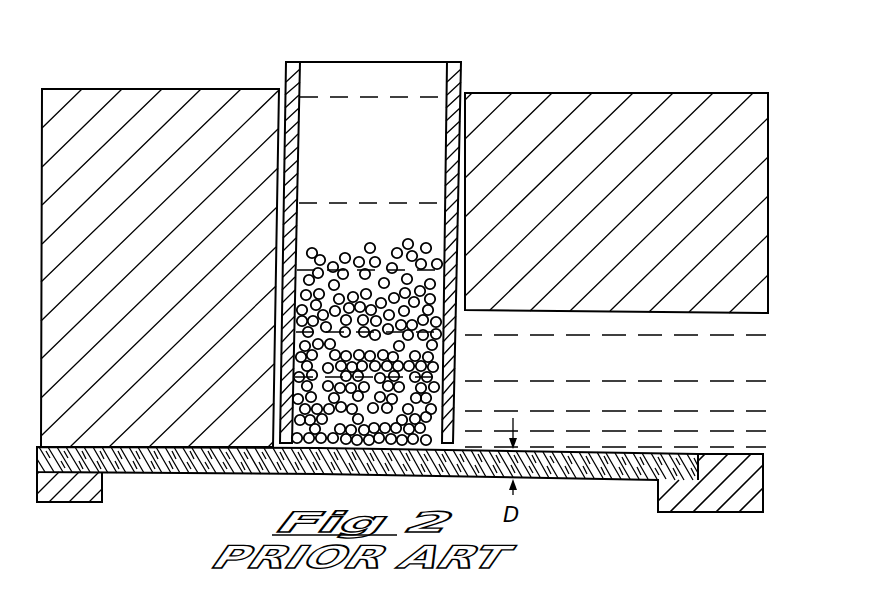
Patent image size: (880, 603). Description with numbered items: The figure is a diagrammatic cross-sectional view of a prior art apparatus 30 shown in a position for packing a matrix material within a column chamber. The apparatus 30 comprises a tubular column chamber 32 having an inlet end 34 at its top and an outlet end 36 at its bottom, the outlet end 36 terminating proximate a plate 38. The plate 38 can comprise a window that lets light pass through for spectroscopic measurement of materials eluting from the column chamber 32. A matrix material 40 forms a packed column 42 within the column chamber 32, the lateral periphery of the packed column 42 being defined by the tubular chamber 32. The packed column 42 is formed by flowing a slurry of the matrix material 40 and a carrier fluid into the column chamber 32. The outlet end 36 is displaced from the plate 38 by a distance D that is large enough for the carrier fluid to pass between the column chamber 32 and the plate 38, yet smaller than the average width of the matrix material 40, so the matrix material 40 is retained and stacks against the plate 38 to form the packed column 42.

The apparatus 30 is at (626, 52).
The tubular column chamber 32 is at (472, 79).
The inlet end 34 is at (335, 72).
The outlet end 36 is at (463, 442).
The plate 38 is at (156, 462).
The matrix material 40 is at (371, 240).
The packed column 42 is at (462, 358).